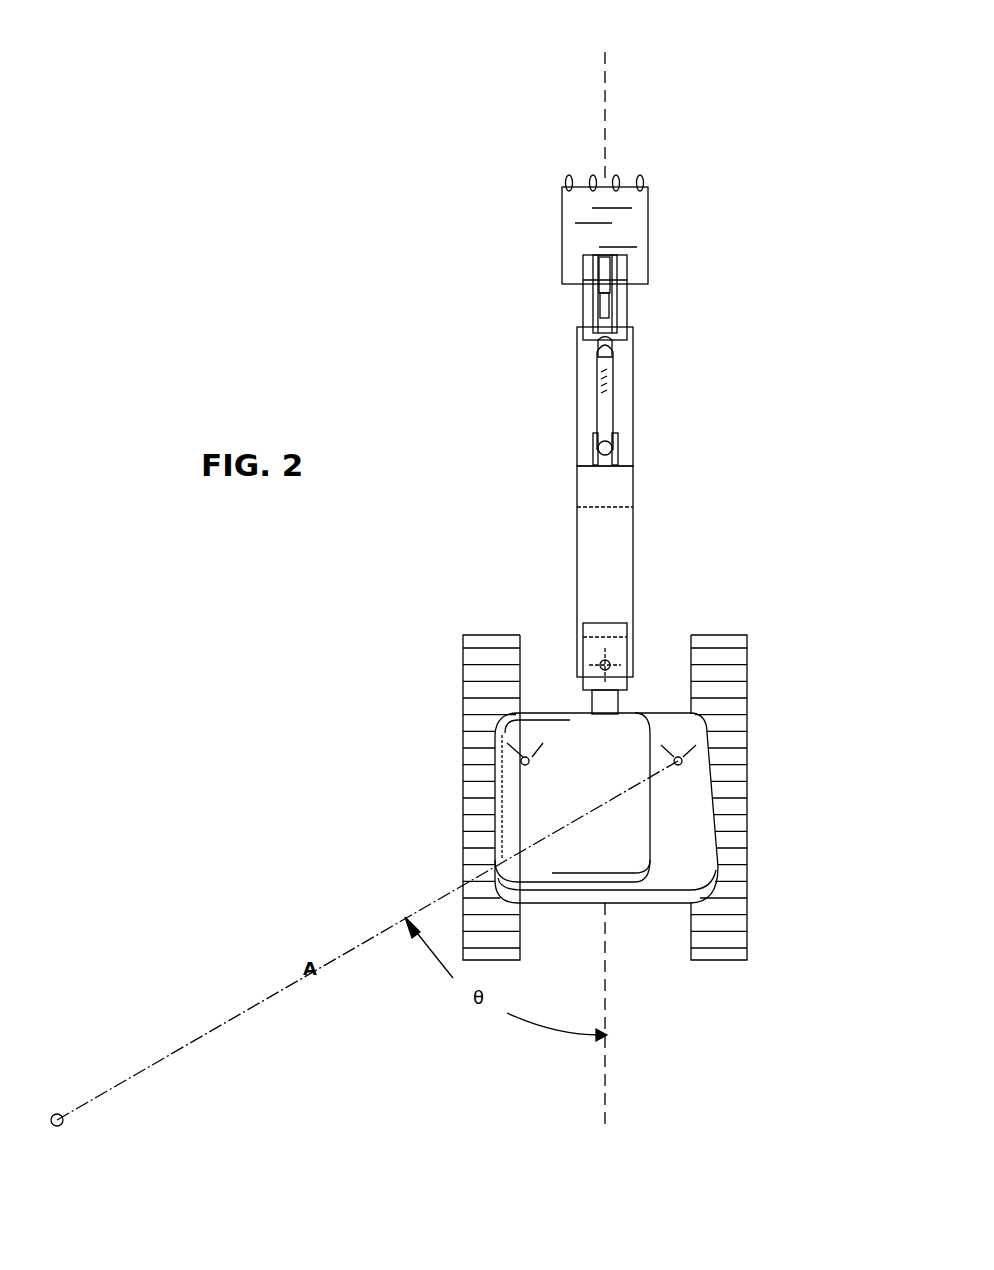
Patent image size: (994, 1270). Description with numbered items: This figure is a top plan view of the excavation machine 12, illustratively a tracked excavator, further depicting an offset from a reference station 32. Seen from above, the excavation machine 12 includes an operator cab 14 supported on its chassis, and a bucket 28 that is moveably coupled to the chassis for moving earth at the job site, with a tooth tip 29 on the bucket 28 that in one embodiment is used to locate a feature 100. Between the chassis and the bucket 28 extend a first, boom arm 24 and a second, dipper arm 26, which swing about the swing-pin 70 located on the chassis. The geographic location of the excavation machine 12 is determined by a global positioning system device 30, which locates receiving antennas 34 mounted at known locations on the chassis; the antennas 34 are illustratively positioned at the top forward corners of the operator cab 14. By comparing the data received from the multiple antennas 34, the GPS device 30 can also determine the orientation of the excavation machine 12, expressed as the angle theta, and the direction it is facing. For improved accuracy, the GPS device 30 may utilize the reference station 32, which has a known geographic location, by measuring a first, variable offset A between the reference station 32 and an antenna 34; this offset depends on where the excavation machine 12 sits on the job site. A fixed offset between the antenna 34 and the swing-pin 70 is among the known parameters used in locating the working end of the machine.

The excavation machine 12 is at (405, 312).
The operator cab 14 is at (675, 865).
The boom arm 24 is at (634, 561).
The dipper arm 26 is at (634, 398).
The bucket 28 is at (627, 230).
The tooth tip 29 is at (570, 176).
The global positioning system (GPS) device 30 is at (767, 769).
The reference station 32 is at (58, 1112).
The receiving antenna 34 is at (526, 757).
The swing-pin 70 is at (603, 663).
The feature 100 is at (606, 52).